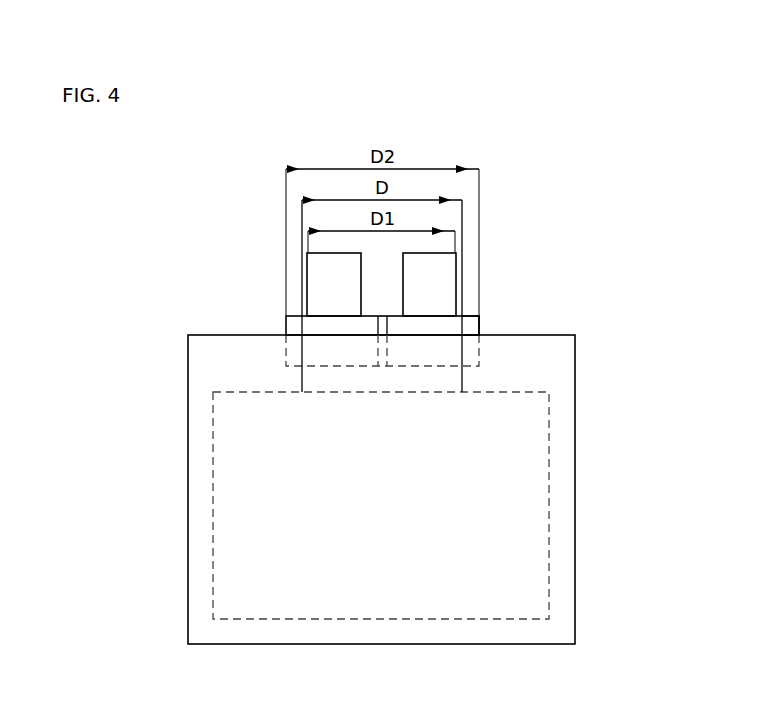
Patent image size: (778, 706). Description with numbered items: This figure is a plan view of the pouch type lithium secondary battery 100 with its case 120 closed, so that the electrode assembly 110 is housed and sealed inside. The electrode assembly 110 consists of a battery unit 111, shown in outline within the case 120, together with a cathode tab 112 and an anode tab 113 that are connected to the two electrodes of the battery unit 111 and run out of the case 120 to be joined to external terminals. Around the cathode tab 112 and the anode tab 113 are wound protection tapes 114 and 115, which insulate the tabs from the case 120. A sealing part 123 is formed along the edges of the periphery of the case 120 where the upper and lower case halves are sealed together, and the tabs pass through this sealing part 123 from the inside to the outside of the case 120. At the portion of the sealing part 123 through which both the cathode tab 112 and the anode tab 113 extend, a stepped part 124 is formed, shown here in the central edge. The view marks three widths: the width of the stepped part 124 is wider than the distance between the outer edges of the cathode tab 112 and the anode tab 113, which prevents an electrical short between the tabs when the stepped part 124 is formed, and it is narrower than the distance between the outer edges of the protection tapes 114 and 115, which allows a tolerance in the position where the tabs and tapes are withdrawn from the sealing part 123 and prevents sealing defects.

The pouch type lithium secondary battery 100 is at (131, 171).
The electrode assembly 110 is at (182, 225).
The battery unit 111 is at (228, 392).
The cathode tab 112 is at (318, 265).
The anode tab 113 is at (422, 261).
The protection tape 114 is at (295, 325).
The protection tape 115 is at (474, 320).
The case 120 is at (575, 468).
The sealing part 123 is at (545, 345).
The stepped part 124 is at (466, 377).